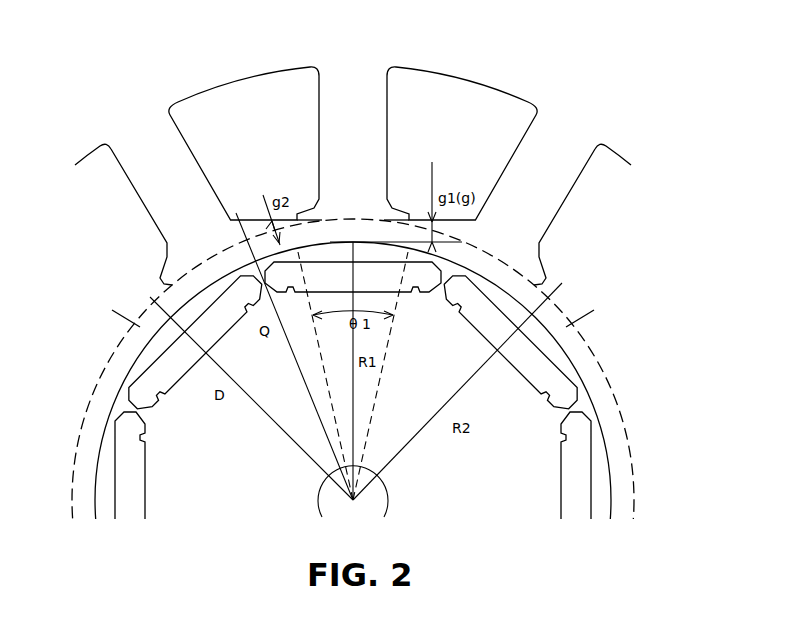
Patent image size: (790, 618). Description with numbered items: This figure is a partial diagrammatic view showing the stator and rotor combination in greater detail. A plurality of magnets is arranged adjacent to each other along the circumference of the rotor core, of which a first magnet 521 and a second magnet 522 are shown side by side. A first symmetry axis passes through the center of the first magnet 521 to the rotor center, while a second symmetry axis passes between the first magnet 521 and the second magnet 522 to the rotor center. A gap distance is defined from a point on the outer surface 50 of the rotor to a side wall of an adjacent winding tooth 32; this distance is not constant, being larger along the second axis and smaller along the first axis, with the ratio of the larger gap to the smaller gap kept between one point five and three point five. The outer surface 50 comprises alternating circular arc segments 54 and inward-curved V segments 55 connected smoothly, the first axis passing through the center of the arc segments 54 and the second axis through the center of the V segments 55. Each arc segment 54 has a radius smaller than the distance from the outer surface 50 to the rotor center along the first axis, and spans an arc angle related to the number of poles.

The winding tooth 32 is at (367, 143).
The outer surface 50 is at (536, 311).
The first magnet 521 is at (143, 327).
The second magnet 522 is at (463, 249).
The circular arc segment 54 is at (560, 340).
The V segment 55 is at (592, 393).